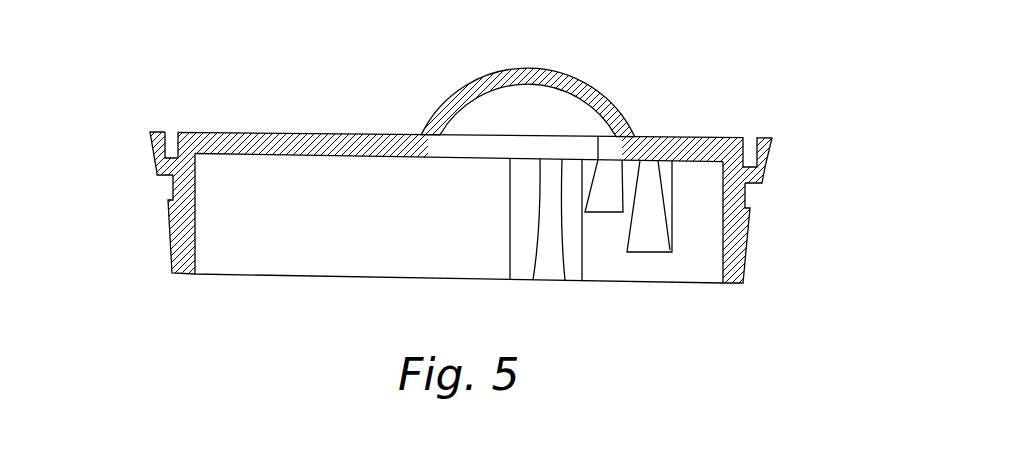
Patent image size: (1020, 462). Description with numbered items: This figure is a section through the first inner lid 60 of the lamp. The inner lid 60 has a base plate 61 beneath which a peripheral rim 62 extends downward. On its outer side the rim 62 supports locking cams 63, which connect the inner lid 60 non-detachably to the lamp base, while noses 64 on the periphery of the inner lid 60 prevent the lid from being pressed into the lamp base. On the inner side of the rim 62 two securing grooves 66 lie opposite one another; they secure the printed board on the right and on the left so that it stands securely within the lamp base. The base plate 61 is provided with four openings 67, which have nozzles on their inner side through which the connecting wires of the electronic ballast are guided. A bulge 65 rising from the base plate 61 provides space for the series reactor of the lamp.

The first inner lid 60 is at (190, 84).
The base plate 61 is at (268, 118).
The peripheral rim 62 is at (242, 244).
The locking cams 63 is at (148, 230).
The noses 64 is at (133, 141).
The bulge 65 is at (559, 55).
The securing grooves 66 is at (562, 237).
The openings 67 is at (653, 191).